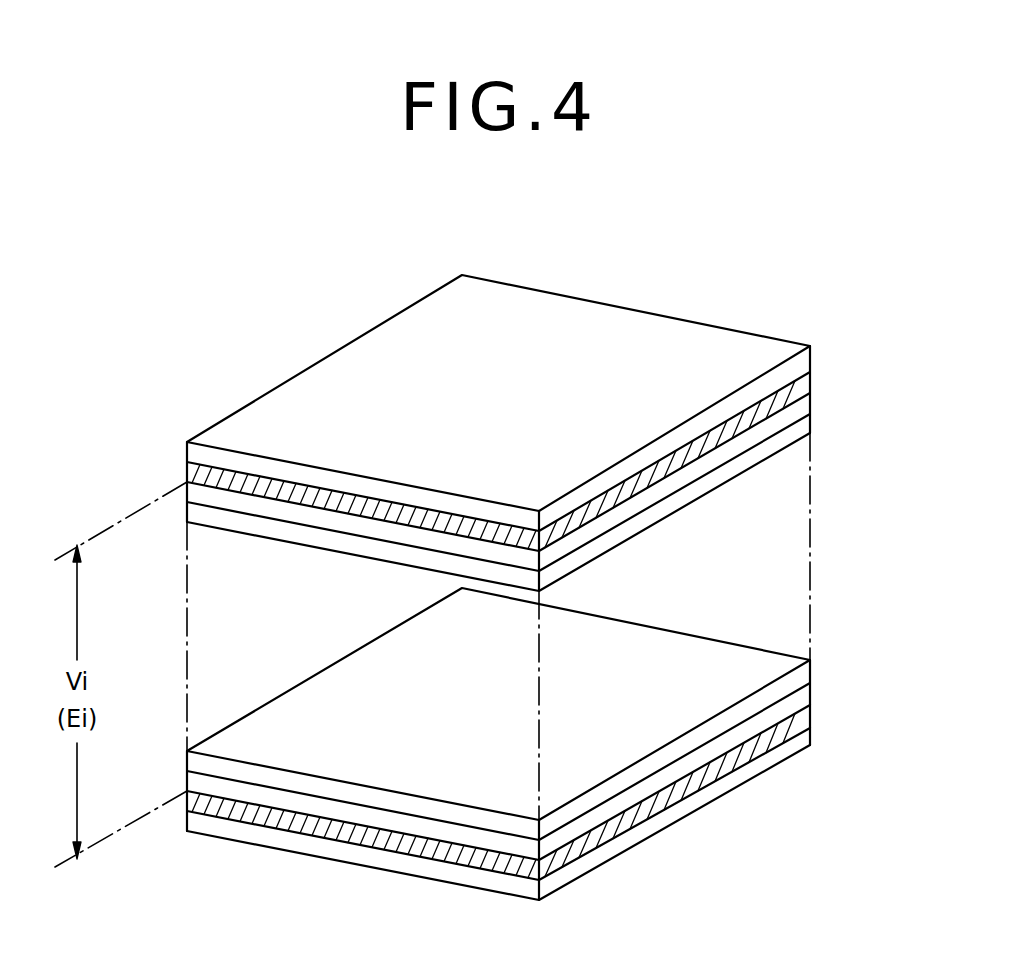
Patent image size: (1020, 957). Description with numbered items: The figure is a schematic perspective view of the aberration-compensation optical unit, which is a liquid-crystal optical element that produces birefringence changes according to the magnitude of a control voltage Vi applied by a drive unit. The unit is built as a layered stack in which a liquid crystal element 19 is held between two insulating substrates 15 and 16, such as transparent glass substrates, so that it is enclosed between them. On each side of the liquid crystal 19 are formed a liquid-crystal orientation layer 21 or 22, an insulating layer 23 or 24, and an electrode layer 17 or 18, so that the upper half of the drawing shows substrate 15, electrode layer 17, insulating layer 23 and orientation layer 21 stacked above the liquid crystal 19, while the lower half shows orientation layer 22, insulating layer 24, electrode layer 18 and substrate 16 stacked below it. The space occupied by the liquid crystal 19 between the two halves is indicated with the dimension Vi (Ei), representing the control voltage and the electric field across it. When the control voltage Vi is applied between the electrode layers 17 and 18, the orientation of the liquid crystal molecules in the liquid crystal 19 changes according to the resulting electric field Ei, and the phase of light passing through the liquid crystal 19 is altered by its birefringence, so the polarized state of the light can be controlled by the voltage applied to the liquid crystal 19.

The insulating substrate 15 is at (813, 360).
The electrode layer 17 is at (813, 383).
The insulating layer 23 is at (813, 406).
The liquid-crystal orientation layer 21 is at (813, 424).
The liquid crystal element 19 is at (798, 558).
The liquid-crystal orientation layer 22 is at (803, 673).
The insulating layer 24 is at (803, 692).
The electrode layer 18 is at (810, 710).
The insulating substrate 16 is at (810, 735).